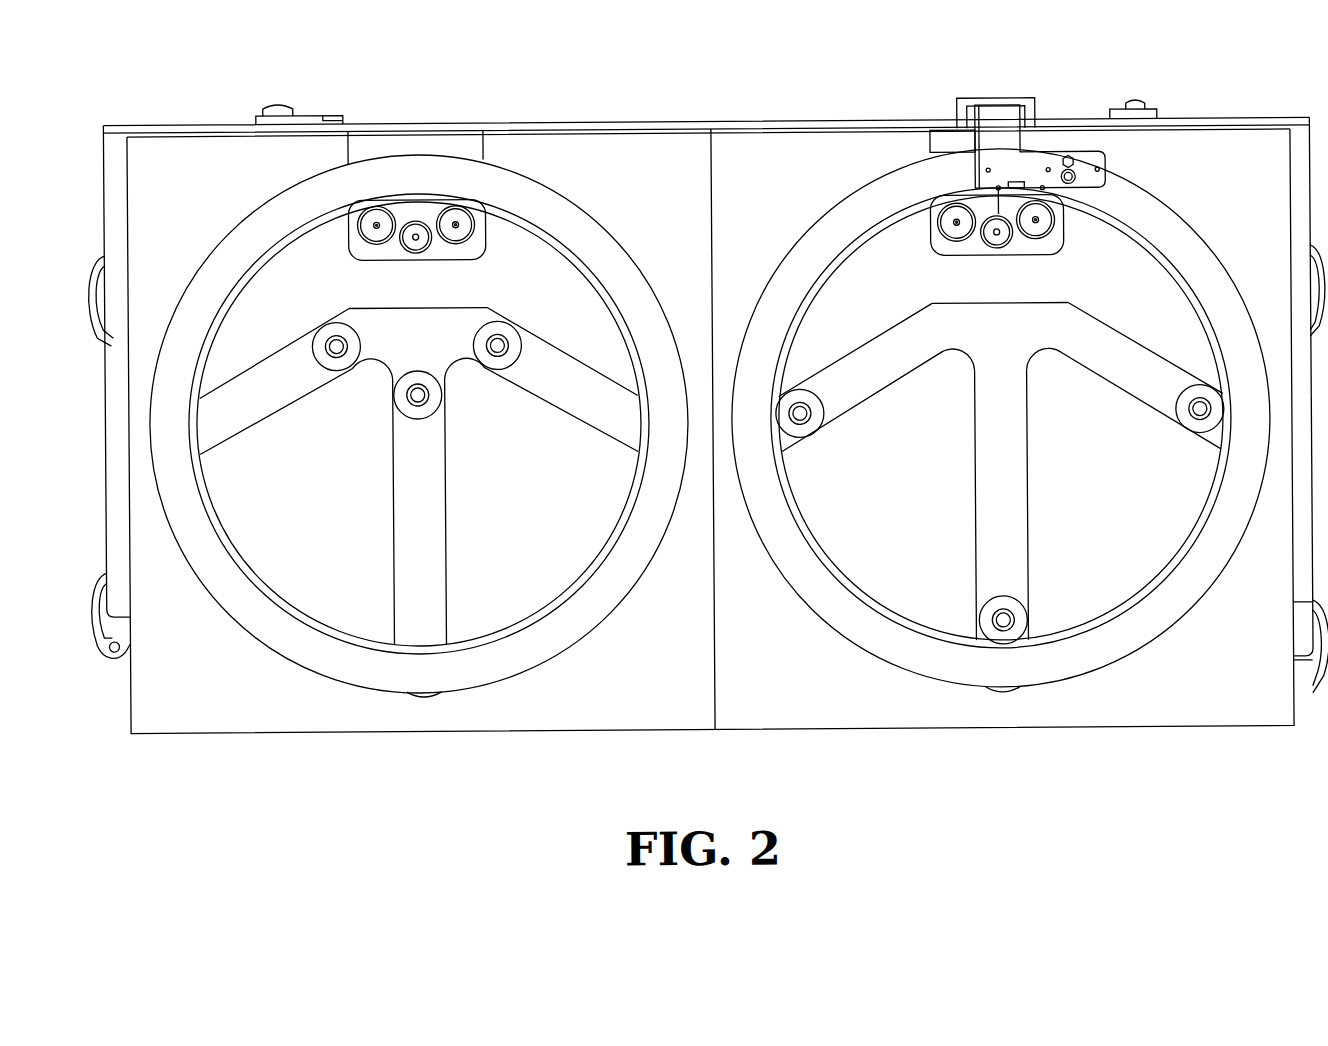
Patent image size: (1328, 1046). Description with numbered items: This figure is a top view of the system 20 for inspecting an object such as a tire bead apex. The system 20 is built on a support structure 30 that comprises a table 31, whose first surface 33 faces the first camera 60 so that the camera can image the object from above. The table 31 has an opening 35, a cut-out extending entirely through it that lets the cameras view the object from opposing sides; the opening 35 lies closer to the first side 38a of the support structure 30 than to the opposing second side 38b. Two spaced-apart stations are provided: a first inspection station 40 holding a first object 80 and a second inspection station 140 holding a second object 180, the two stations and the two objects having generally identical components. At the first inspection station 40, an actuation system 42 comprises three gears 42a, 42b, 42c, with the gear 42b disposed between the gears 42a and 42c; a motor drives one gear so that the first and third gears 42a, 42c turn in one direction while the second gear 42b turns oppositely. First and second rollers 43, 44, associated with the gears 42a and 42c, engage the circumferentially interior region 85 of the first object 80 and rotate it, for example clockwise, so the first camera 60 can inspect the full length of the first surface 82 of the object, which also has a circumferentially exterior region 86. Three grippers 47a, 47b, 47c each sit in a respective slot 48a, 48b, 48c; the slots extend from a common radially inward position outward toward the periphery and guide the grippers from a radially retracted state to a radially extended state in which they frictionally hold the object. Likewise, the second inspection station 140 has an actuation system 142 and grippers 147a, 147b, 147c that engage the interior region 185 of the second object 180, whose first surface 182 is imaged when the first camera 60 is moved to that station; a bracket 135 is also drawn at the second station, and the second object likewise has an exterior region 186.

The system 20 is at (224, 100).
The support structure 30 is at (660, 160).
The table 31 is at (128, 592).
The first surface 33 is at (245, 718).
The opening 35 is at (947, 140).
The first side 38a is at (1272, 140).
The second side 38b is at (1282, 708).
The first inspection station 40 is at (999, 400).
The actuation system 42 is at (989, 215).
The first gear 42a is at (1042, 246).
The second gear 42b is at (998, 250).
The third gear 42c is at (955, 247).
The first roller 43 is at (1052, 228).
The second roller 44 is at (962, 218).
The gripper 47a is at (1192, 428).
The gripper 47b is at (982, 618).
The gripper 47c is at (805, 430).
The slot 48a is at (1140, 396).
The slot 48b is at (990, 546).
The slot 48c is at (860, 396).
The first camera 60 is at (1048, 150).
The first object 80 is at (1007, 420).
The first surface 82 is at (1213, 284).
The circumferentially interior region 85 is at (1173, 290).
The circumferentially exterior region 86 is at (1250, 310).
The mounting bracket 135 is at (441, 140).
The second inspection station 140 is at (418, 405).
The actuation system 142 is at (343, 196).
The gripper 147a is at (498, 360).
The gripper 147b is at (400, 395).
The gripper 147c is at (328, 345).
The second object 180 is at (426, 422).
The first surface 182 is at (612, 262).
The interior region 185 is at (605, 302).
The ring inner surface 186 is at (648, 292).